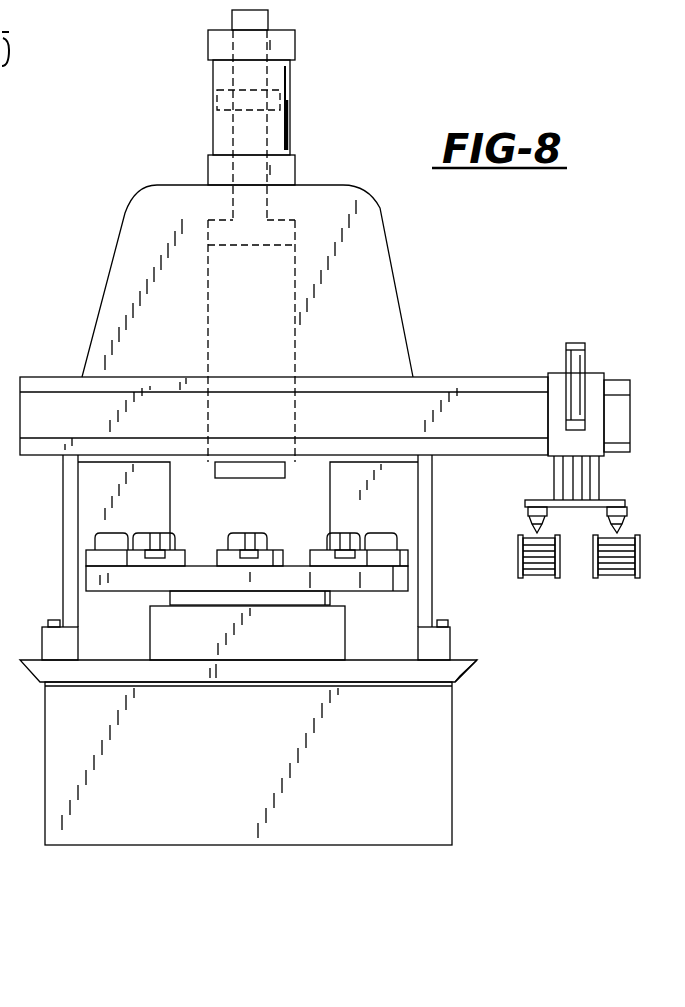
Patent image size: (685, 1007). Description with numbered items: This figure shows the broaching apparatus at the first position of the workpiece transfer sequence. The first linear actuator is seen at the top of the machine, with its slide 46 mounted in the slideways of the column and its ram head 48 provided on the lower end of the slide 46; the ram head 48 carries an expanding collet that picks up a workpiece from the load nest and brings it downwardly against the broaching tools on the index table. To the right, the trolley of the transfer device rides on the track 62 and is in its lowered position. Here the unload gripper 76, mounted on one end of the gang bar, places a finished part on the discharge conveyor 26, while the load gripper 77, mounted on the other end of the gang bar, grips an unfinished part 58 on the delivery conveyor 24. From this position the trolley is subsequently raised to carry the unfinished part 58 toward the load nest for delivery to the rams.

The slide 46 is at (208, 295).
The ram head 48 is at (235, 478).
The unload gripper 76 is at (528, 518).
The load gripper 77 is at (627, 520).
The track 62 is at (522, 537).
The unfinished workpiece 58 is at (627, 535).
The discharge conveyor 26 is at (535, 582).
The delivery conveyor 24 is at (613, 582).